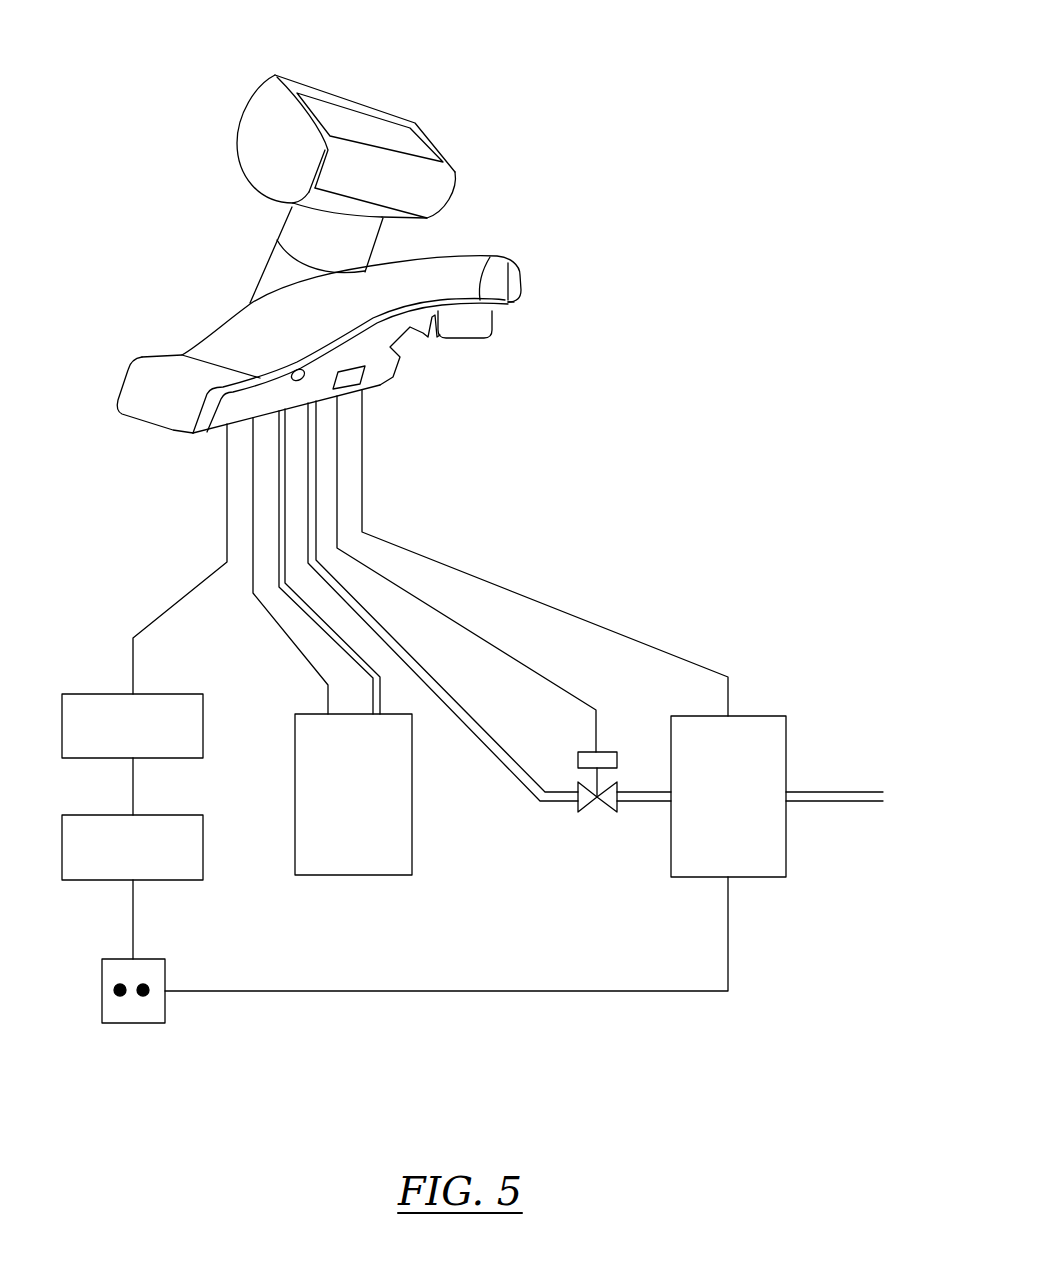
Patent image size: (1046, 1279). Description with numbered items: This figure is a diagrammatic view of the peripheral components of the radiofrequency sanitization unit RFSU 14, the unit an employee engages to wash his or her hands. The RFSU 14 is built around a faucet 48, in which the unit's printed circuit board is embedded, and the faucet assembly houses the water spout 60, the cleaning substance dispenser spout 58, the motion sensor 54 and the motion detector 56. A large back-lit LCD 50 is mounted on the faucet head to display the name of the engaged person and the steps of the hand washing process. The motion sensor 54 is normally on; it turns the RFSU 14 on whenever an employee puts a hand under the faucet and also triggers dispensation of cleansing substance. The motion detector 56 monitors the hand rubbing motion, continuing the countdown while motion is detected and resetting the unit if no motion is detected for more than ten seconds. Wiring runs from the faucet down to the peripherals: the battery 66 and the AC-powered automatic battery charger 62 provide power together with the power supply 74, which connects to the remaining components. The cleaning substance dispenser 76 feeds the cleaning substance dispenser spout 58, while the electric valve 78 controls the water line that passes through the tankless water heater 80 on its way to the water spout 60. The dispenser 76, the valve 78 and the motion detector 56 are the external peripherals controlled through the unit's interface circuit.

The RFSU-1 (radiofrequency sanitization unit 1) 14 is at (257, 90).
The RFSU-1 faucet 48 is at (380, 189).
The RFSU-1 LCD (liquefied crystal display) 50 is at (398, 113).
The RFSU-1 motion sensor 54 is at (301, 383).
The RFSU-1 motion detector 56 is at (353, 388).
The RFSU-1 cleaning substance dispenser spout 58 is at (433, 340).
The RFSU-1 water spout 60 is at (467, 340).
The RFSU-1 battery charger 62 is at (113, 881).
The RFSU-1 battery 66 is at (113, 693).
The RFSU-1 power supply 74 is at (138, 1023).
The RFSU-1 cleaning substance dispenser 76 is at (353, 875).
The RFSU-1 electric valve 78 is at (587, 807).
The RFSU-1 tankless water heater 80 is at (762, 715).